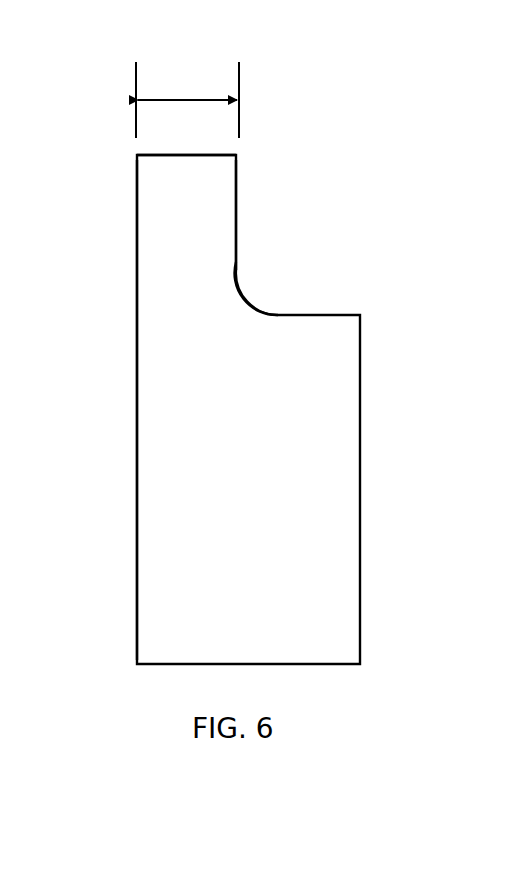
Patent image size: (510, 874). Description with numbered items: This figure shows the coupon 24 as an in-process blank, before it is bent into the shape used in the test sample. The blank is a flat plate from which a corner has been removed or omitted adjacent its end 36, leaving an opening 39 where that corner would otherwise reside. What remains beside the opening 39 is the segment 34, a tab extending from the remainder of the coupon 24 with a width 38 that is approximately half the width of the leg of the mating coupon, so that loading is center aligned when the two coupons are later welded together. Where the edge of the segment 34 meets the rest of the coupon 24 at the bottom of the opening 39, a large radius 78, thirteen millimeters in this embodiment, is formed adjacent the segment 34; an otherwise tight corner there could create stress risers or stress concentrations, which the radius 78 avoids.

The coupon 24 is at (386, 399).
The segment 34 is at (137, 215).
The end 36 is at (165, 155).
The width 38 is at (183, 100).
The opening 39 is at (236, 210).
The radius 78 is at (252, 294).